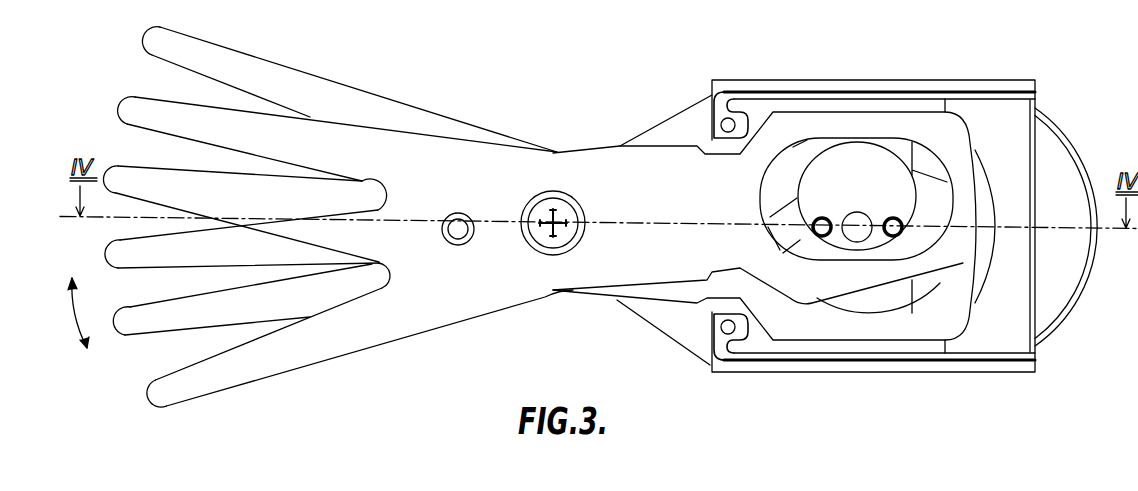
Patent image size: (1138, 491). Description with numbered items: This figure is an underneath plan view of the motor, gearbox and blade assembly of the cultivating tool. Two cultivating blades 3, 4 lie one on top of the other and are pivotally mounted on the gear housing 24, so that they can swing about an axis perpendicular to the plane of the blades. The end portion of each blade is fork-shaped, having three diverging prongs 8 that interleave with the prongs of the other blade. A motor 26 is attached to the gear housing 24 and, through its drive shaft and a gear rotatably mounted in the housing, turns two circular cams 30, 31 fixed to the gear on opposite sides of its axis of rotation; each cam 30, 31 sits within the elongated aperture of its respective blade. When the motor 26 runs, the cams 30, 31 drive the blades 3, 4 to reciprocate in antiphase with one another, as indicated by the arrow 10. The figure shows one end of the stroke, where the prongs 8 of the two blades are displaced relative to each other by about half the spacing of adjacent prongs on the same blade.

The cultivating blade 3 is at (443, 123).
The cultivating blade 4 is at (328, 350).
The prongs 8 is at (128, 171).
The arrow 10 is at (74, 312).
The gear housing 24 is at (1012, 118).
The motor 26 is at (1053, 175).
The cam 30 is at (862, 302).
The cam 31 is at (866, 192).